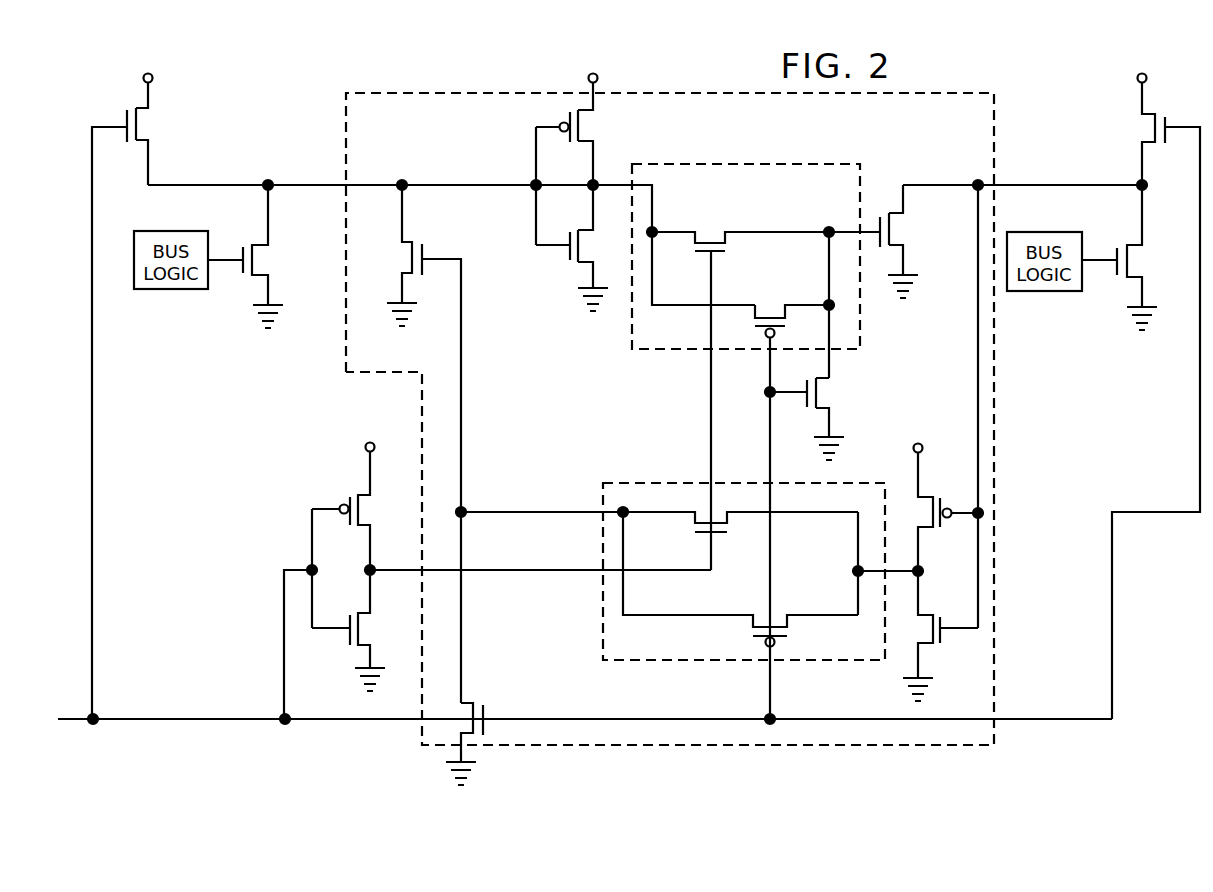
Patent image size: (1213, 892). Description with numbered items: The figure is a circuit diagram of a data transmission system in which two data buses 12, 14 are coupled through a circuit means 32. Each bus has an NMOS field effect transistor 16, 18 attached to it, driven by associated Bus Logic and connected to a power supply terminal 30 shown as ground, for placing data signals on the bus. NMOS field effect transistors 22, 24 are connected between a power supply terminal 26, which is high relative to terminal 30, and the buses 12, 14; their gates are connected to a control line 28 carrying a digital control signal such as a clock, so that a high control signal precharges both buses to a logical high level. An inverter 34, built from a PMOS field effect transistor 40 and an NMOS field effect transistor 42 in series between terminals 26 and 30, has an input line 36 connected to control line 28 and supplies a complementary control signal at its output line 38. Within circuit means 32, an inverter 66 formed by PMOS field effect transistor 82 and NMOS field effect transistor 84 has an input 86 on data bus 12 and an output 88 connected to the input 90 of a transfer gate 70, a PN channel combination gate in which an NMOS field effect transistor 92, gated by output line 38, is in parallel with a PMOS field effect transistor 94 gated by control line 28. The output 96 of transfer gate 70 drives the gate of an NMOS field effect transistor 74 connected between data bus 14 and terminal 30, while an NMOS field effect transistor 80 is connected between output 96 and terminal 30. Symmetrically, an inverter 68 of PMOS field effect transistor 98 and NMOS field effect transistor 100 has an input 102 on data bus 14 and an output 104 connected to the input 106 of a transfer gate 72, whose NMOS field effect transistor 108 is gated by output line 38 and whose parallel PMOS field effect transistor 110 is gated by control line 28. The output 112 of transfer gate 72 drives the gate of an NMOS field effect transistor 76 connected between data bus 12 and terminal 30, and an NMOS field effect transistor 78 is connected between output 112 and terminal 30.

The data bus 12 is at (306, 185).
The data bus 14 is at (1063, 185).
The NMOS field effect transistor 16 is at (260, 273).
The NMOS field effect transistor 18 is at (1133, 275).
The NMOS field effect transistor 22 is at (142, 140).
The NMOS field effect transistor 24 is at (1148, 140).
The power supply terminal 26 is at (152, 75).
The control line 28 is at (70, 720).
The power supply terminal 30 is at (258, 310).
The circuit means 32 is at (452, 86).
The inverter 34 is at (455, 585).
The input line 36 is at (284, 576).
The output line 38 is at (405, 570).
The PMOS field effect transistor 40 is at (364, 520).
The NMOS field effect transistor 42 is at (362, 640).
The inverter 66 is at (550, 185).
The inverter 68 is at (987, 433).
The transfer gate 70 is at (741, 441).
The transfer gate 72 is at (746, 545).
The NMOS field effect transistor 74 is at (895, 243).
The NMOS field effect transistor 76 is at (404, 242).
The NMOS field effect transistor 78 is at (470, 700).
The NMOS field effect transistor 80 is at (822, 405).
The PMOS field effect transistor 82 is at (583, 140).
The NMOS field effect transistor 84 is at (583, 260).
The input 86 is at (532, 188).
The output 88 is at (591, 183).
The input 90 is at (655, 228).
The NMOS field effect transistor 92 is at (727, 243).
The PMOS field effect transistor 94 is at (762, 306).
The output 96 is at (829, 228).
The PMOS field effect transistor 98 is at (926, 495).
The NMOS field effect transistor 100 is at (925, 645).
The input 102 is at (982, 512).
The output 104 is at (925, 567).
The input 106 is at (855, 569).
The NMOS field effect transistor 108 is at (690, 520).
The PMOS field effect transistor 110 is at (752, 622).
The output 112 is at (619, 514).